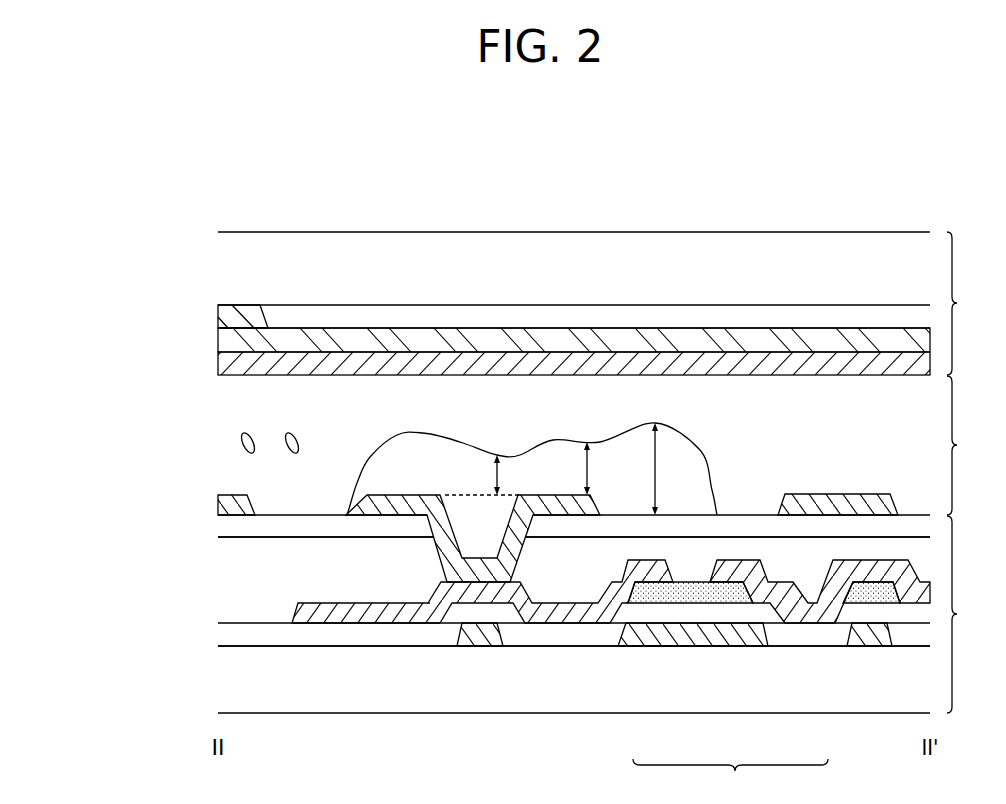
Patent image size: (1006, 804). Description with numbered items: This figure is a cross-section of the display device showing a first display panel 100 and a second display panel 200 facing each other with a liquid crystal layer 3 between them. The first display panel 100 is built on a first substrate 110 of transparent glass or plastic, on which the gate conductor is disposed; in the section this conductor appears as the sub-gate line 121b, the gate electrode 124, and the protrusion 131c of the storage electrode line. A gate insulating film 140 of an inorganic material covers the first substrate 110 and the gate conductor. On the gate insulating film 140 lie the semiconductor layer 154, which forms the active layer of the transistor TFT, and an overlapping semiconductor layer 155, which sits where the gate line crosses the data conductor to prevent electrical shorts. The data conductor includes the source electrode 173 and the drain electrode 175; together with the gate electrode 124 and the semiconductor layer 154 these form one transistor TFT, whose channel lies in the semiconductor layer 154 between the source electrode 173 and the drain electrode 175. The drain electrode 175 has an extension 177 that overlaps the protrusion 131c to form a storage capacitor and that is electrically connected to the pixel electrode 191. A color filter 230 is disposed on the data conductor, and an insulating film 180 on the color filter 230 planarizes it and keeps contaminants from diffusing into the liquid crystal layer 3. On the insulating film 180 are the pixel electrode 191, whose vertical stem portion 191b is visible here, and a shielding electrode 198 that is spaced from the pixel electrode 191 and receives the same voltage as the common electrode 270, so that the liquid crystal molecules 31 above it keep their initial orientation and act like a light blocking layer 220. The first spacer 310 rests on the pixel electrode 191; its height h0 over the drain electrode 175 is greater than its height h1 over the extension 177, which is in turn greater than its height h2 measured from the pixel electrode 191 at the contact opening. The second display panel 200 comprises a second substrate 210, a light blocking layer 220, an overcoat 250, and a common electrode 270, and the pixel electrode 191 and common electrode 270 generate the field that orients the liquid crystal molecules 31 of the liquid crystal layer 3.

The second display panel 200 is at (971, 303).
The second substrate 210 is at (480, 255).
The light blocking layer 220 is at (570, 315).
The overcoat 250 is at (657, 343).
The common electrode 270 is at (754, 370).
The shielding electrode 198 is at (862, 510).
The liquid crystal layer 3 is at (961, 445).
The liquid crystal molecules 31 is at (237, 443).
The first spacer 310 is at (377, 480).
The height of the first spacer over the drain electrode h0 is at (670, 469).
The height of the first spacer over the extension h1 is at (603, 468).
The height of the first spacer at the opening h2 is at (486, 477).
The first display panel 100 is at (971, 614).
The first substrate 110 is at (350, 690).
The gate insulating film 140 is at (240, 637).
The insulating film 180 is at (240, 527).
The color filter 230 is at (240, 585).
The protrusion 131c is at (475, 640).
The gate electrode 124 is at (712, 636).
The sub-gate line 121b is at (870, 635).
The semiconductor layer 154 is at (733, 585).
The overlapping semiconductor layer 155 is at (888, 618).
The extension 177 is at (412, 614).
The drain electrode 175 is at (650, 567).
The source electrode 173 is at (808, 613).
The vertical stem portion 191b is at (230, 507).
The pixel electrode 191 is at (558, 507).
The transistor TFT is at (730, 777).